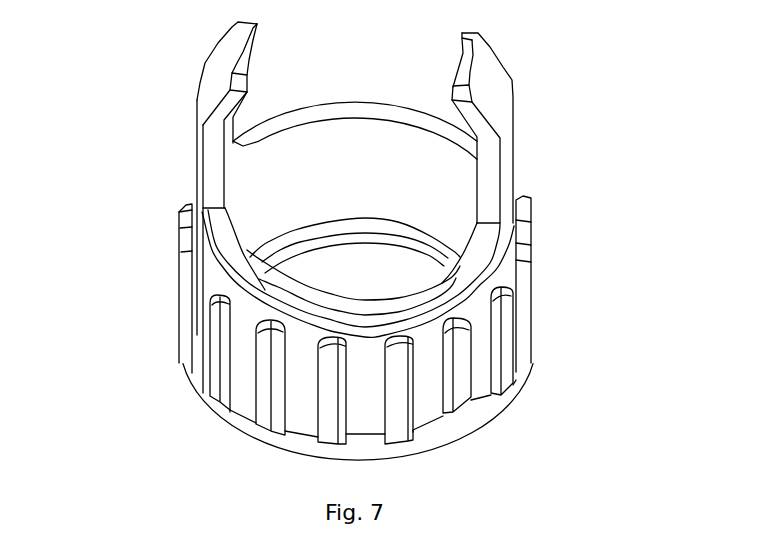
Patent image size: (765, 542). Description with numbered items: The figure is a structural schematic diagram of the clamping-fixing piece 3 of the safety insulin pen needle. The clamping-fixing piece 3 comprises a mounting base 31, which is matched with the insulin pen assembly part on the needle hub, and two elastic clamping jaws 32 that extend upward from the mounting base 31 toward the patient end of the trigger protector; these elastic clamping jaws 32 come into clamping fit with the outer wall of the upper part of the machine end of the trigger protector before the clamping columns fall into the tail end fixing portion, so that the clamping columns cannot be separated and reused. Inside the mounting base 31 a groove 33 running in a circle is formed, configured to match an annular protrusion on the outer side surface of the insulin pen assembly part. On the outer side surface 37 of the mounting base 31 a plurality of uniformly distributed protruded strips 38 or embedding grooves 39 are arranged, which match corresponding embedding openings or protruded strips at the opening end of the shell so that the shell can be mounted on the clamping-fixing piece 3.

The clamping-fixing piece 3 is at (524, 332).
The mounting base 31 is at (245, 342).
The elastic clamping jaws 32 is at (490, 200).
The groove 33 is at (347, 228).
The outer side surface 37 is at (248, 378).
The protruded strips 38 is at (267, 405).
The embedding grooves 39 is at (432, 402).